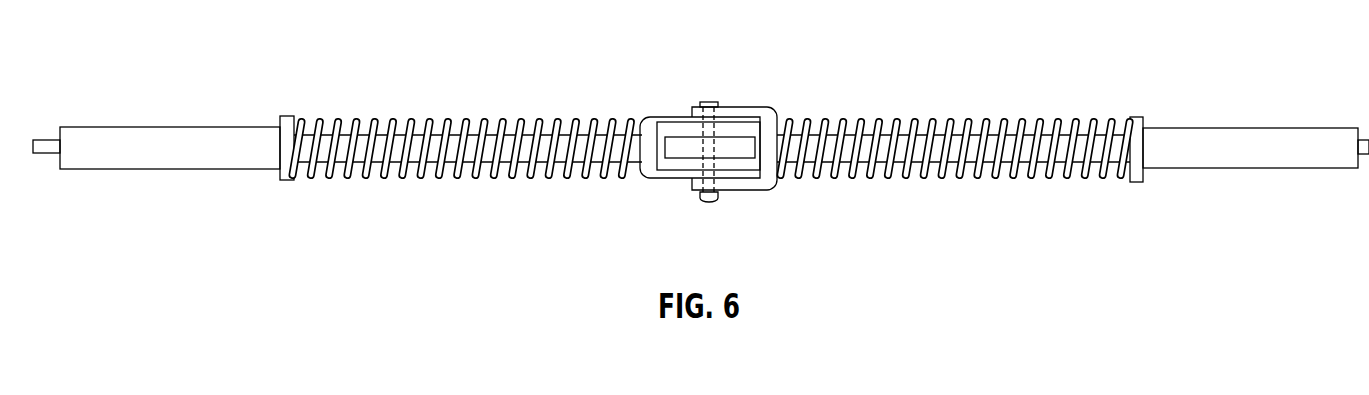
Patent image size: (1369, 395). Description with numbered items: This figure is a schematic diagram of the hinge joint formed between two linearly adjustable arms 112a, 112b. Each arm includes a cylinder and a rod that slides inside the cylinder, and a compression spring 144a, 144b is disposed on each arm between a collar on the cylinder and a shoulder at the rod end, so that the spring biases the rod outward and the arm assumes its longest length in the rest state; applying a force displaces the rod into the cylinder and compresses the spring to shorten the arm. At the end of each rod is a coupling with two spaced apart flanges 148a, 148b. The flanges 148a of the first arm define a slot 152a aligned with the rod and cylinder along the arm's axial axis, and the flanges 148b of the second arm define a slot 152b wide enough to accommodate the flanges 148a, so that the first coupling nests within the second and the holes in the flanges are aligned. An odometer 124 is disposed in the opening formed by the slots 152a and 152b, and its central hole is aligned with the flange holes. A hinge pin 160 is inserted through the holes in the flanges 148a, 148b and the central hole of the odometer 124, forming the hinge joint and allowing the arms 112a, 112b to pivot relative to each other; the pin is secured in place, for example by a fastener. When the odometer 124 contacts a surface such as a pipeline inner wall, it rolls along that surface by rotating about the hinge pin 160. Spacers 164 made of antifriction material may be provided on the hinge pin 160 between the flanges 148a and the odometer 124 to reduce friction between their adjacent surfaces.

The linearly adjustable arm 112a is at (180, 127).
The linearly adjustable arm 112b is at (1225, 128).
The compression spring 144a is at (473, 118).
The compression spring 144b is at (963, 120).
The flanges 148a is at (673, 177).
The flanges 148b is at (735, 107).
The slot 152a is at (677, 135).
The slot 152b is at (752, 118).
The odometer 124 is at (745, 152).
The hinge pin 160 is at (710, 102).
The spacers 164 is at (727, 165).